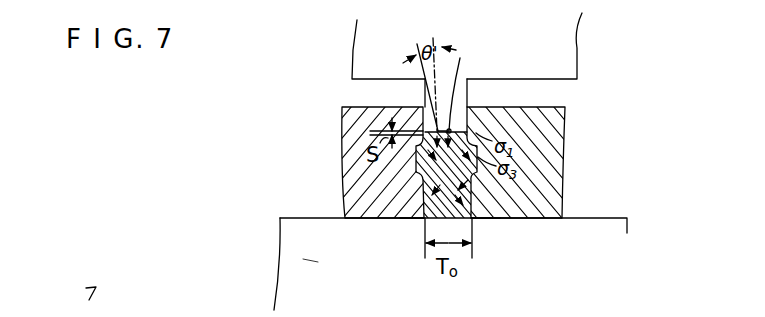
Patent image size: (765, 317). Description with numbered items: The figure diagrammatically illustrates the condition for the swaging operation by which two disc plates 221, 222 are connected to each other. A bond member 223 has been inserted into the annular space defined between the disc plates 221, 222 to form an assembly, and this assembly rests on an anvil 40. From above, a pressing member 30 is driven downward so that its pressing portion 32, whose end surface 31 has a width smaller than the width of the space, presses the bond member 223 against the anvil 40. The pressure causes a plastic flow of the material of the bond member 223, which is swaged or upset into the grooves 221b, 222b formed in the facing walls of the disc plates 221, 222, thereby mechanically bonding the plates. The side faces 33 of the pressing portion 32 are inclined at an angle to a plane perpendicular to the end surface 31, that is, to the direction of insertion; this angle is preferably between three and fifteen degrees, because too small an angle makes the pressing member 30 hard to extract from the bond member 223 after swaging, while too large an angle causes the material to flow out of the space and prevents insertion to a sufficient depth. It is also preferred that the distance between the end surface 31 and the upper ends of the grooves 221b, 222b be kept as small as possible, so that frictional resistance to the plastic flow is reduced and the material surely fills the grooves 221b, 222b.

The pressing member 30 is at (350, 58).
The end surface 31 is at (461, 60).
The pressing portion 32 is at (468, 92).
The side faces 33 is at (424, 91).
The anvil 40 is at (290, 268).
The disc plate 221 is at (343, 125).
The disc plate 222 is at (567, 152).
The bond member 223 is at (463, 219).
The groove 221b is at (406, 208).
The groove 222b is at (484, 208).